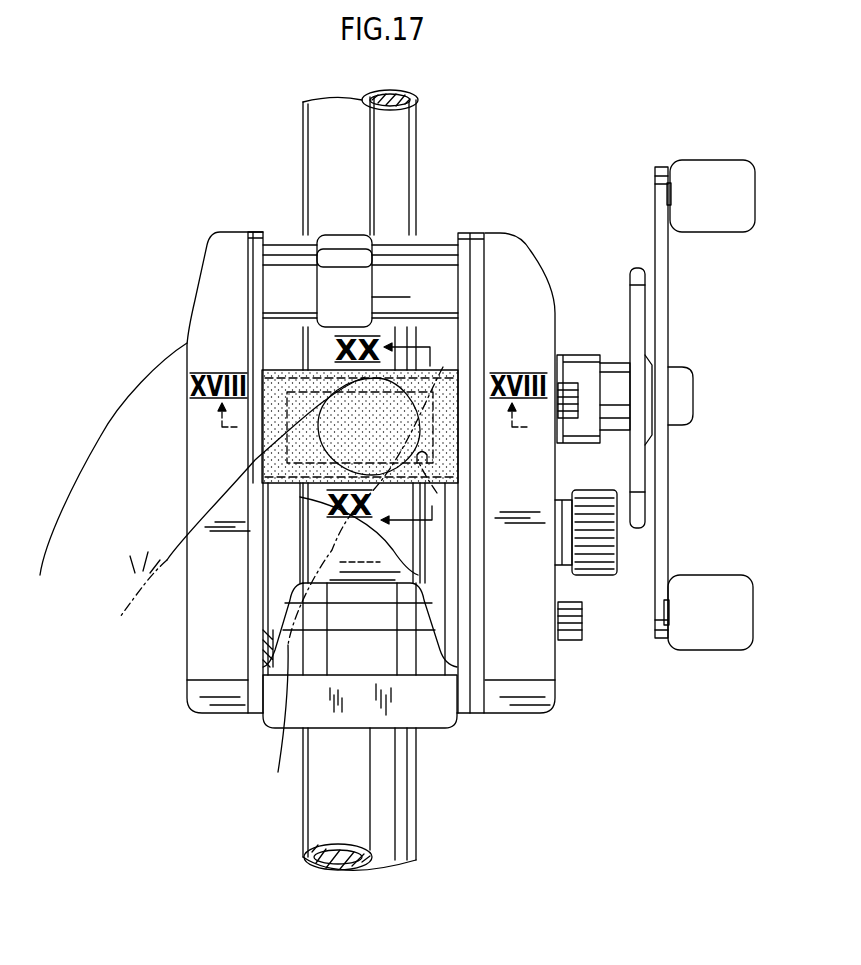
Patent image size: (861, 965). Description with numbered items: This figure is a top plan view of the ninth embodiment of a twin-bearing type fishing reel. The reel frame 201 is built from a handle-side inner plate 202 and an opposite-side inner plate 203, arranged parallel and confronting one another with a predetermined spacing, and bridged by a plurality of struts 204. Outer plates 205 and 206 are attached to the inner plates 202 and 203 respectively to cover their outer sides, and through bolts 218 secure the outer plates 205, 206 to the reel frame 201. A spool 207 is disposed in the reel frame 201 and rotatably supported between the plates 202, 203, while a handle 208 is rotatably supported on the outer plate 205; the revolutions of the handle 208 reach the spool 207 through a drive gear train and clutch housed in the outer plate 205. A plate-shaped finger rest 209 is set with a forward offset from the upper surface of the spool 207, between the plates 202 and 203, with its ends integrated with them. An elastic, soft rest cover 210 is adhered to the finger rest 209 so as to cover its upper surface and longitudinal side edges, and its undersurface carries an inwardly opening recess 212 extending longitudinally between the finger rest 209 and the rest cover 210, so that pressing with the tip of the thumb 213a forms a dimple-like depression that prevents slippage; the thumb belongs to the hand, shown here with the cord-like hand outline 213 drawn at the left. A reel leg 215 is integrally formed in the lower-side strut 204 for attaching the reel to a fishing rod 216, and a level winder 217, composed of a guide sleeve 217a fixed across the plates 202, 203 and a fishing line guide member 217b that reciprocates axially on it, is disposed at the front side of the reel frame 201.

The reel frame 201 is at (257, 226).
The handle-side inner plate 202 is at (467, 232).
The opposite-side inner plate 203 is at (257, 260).
The strut 204 is at (340, 540).
The handle-side outer plate 205 is at (525, 255).
The opposite-side outer plate 206 is at (207, 290).
The spool 207 is at (283, 543).
The handle 208 is at (660, 318).
The finger rest 209 is at (443, 367).
The rest cover 210 is at (443, 437).
The recess 212 is at (437, 493).
The cable 213 is at (138, 387).
The thumb 213a is at (418, 575).
The reel leg 215 is at (380, 655).
The fishing rod 216 is at (415, 838).
The level winder 217 is at (432, 219).
The guide sleeve 217a is at (418, 280).
The fishing line guide member 217b is at (342, 243).
The through bolt 218 is at (573, 383).